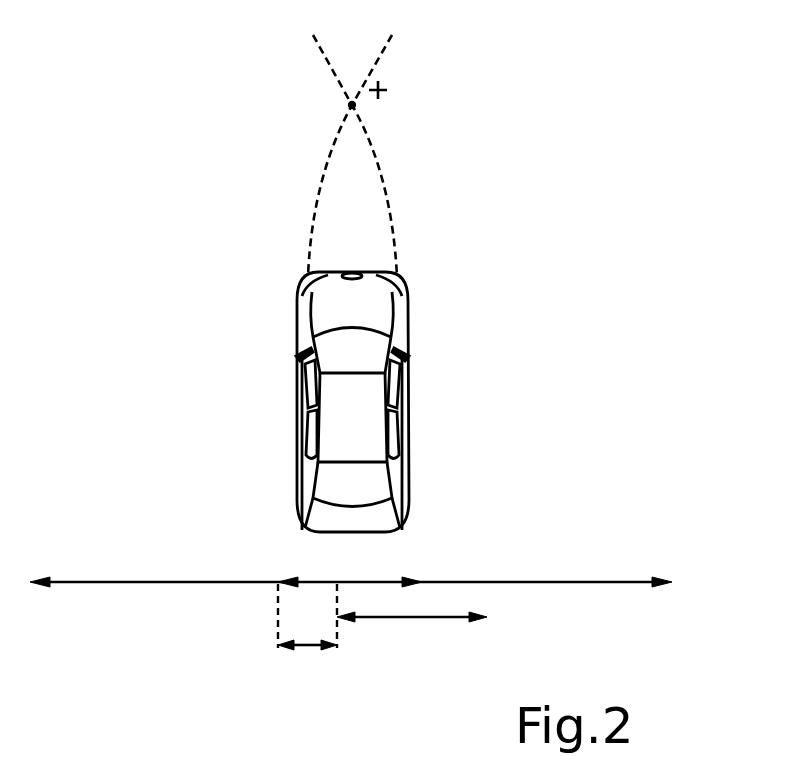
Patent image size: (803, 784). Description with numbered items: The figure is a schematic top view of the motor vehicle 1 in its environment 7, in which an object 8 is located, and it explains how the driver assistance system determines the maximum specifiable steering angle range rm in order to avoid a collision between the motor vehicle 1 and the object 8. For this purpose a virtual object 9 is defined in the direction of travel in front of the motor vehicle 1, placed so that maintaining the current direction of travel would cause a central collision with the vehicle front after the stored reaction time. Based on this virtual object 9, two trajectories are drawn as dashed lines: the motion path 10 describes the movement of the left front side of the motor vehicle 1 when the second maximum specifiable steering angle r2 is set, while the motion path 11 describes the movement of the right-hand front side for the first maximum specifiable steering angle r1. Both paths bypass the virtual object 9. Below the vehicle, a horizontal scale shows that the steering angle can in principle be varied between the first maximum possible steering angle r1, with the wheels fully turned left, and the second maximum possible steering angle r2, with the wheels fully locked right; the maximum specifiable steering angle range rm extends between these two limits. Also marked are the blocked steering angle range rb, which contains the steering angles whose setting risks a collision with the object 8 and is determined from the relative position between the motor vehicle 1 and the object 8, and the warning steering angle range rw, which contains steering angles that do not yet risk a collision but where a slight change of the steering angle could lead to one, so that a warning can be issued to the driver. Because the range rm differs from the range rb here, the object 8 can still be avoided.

The motor vehicle 1 is at (409, 337).
The environment 7 is at (256, 164).
The object 8 is at (382, 85).
The virtual object 9 is at (357, 106).
The motion path 10 is at (314, 228).
The motion path 11 is at (383, 185).
The first maximum specifiable steering angle r1 is at (40, 579).
The second maximum specifiable steering angle r2 is at (668, 578).
The maximum specifiable steering angle range rm is at (387, 580).
The warning steering angle range rw is at (310, 648).
The blocked steering angle range rb is at (405, 620).